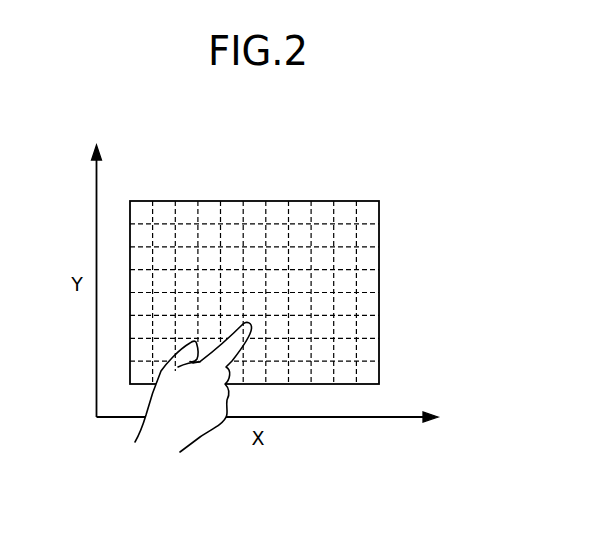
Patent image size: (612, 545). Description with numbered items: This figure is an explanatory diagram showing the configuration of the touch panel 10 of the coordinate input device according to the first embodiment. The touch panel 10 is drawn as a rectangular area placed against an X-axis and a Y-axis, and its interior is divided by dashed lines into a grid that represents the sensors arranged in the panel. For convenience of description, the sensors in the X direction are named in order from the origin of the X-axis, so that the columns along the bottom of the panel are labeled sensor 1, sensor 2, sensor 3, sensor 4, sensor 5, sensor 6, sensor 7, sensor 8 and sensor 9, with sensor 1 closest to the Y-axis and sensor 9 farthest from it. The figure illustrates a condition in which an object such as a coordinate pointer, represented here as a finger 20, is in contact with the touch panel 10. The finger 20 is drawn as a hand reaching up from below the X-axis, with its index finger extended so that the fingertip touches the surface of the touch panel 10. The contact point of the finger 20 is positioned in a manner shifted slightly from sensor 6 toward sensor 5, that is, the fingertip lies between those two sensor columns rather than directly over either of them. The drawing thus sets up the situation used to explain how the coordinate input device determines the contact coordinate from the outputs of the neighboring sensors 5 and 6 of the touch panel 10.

The touch panel 10 is at (188, 213).
The finger 20 is at (234, 343).
The sensor 1 is at (145, 303).
The sensor 2 is at (167, 303).
The sensor 3 is at (190, 303).
The sensor 4 is at (212, 303).
The sensor 5 is at (235, 303).
The sensor 6 is at (257, 303).
The sensor 7 is at (280, 303).
The sensor 8 is at (303, 303).
The sensor 9 is at (325, 303).